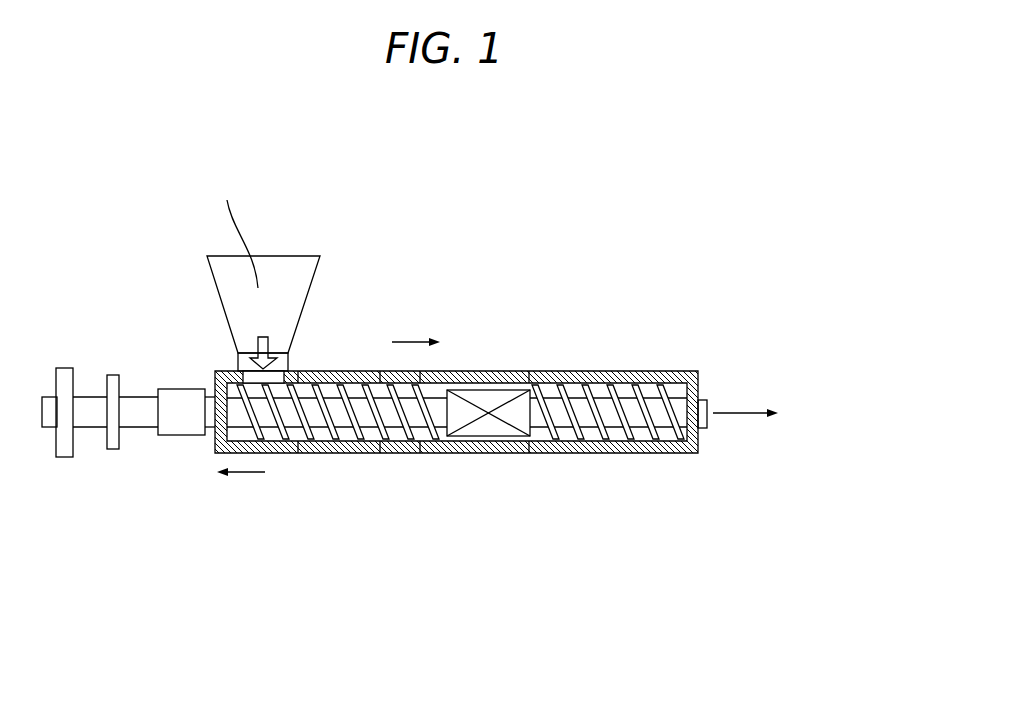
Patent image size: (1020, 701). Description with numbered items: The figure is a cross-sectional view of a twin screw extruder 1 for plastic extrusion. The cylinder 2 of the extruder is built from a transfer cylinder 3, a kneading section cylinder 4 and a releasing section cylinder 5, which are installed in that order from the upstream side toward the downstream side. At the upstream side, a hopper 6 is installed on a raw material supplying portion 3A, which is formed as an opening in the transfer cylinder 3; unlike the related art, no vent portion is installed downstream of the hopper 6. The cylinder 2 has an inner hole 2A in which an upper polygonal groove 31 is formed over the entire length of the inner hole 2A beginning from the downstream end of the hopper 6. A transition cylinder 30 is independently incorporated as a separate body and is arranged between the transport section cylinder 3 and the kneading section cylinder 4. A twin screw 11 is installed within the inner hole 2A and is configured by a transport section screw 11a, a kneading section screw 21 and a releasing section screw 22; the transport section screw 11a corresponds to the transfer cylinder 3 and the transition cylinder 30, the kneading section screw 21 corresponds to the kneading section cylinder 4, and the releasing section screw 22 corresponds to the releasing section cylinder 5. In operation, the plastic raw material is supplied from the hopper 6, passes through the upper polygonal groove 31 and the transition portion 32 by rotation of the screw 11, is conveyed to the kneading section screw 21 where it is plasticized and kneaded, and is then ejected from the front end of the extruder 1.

The twin screw extruder 1 is at (658, 313).
The cylinder 2 is at (216, 372).
The inner hole 2A is at (323, 423).
The transfer cylinder 3 is at (331, 390).
The raw material supplying portion 3A is at (236, 372).
The kneading section cylinder 4 is at (498, 377).
The releasing section cylinder 5 is at (645, 371).
The hopper 6 is at (303, 256).
The twin screw 11 is at (238, 414).
The transport section screw 11a is at (310, 413).
The kneading section screw 21 is at (485, 425).
The releasing section screw 22 is at (643, 415).
The transition cylinder 30 is at (382, 373).
The upper polygonal groove 31 is at (335, 437).
The transition portion 32 is at (412, 393).